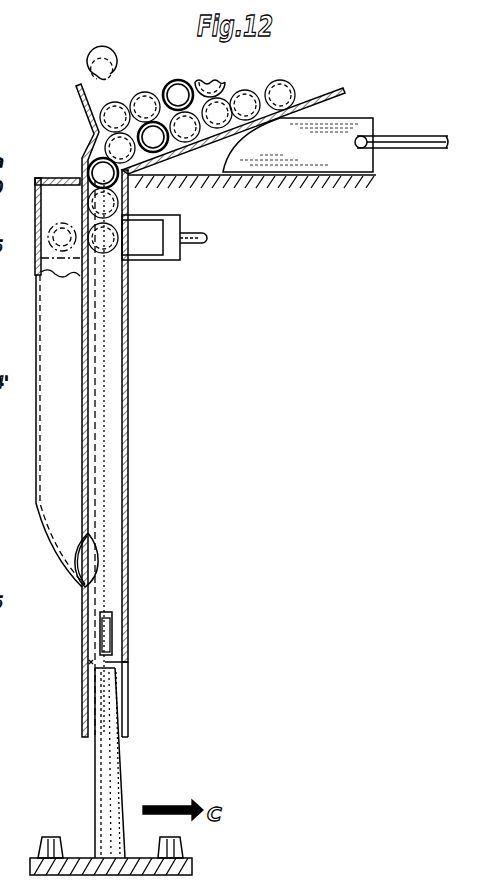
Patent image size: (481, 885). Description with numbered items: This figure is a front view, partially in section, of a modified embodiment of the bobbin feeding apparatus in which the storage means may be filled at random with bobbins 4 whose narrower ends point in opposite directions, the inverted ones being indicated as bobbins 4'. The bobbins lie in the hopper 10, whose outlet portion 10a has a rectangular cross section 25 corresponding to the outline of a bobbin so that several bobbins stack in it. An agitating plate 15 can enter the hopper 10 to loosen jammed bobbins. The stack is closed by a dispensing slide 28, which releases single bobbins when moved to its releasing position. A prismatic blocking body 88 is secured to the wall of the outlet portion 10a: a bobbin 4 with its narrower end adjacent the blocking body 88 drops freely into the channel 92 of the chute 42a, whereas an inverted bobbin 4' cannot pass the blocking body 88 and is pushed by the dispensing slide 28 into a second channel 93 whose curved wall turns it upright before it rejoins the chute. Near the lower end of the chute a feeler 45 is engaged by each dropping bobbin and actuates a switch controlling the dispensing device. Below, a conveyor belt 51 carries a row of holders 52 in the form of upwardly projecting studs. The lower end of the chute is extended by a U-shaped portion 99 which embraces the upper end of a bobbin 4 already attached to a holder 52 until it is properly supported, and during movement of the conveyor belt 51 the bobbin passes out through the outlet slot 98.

The bobbin 4 is at (191, 455).
The inverted bobbin 4' is at (107, 63).
The hopper 10 is at (97, 104).
The outlet portion 10a is at (164, 237).
The agitating plate 15 is at (327, 148).
The rectangular cross section 25 is at (127, 197).
The dispensing slide 28 is at (157, 266).
The chute 42a is at (134, 433).
The feeler 45 is at (107, 633).
The conveyor belt 51 is at (82, 863).
The holder 52 is at (163, 840).
The blocking body 88 is at (57, 227).
The channel 92 is at (113, 372).
The second channel 93 is at (50, 348).
The outlet slot 98 is at (124, 720).
The U-shaped portion 99 is at (122, 690).